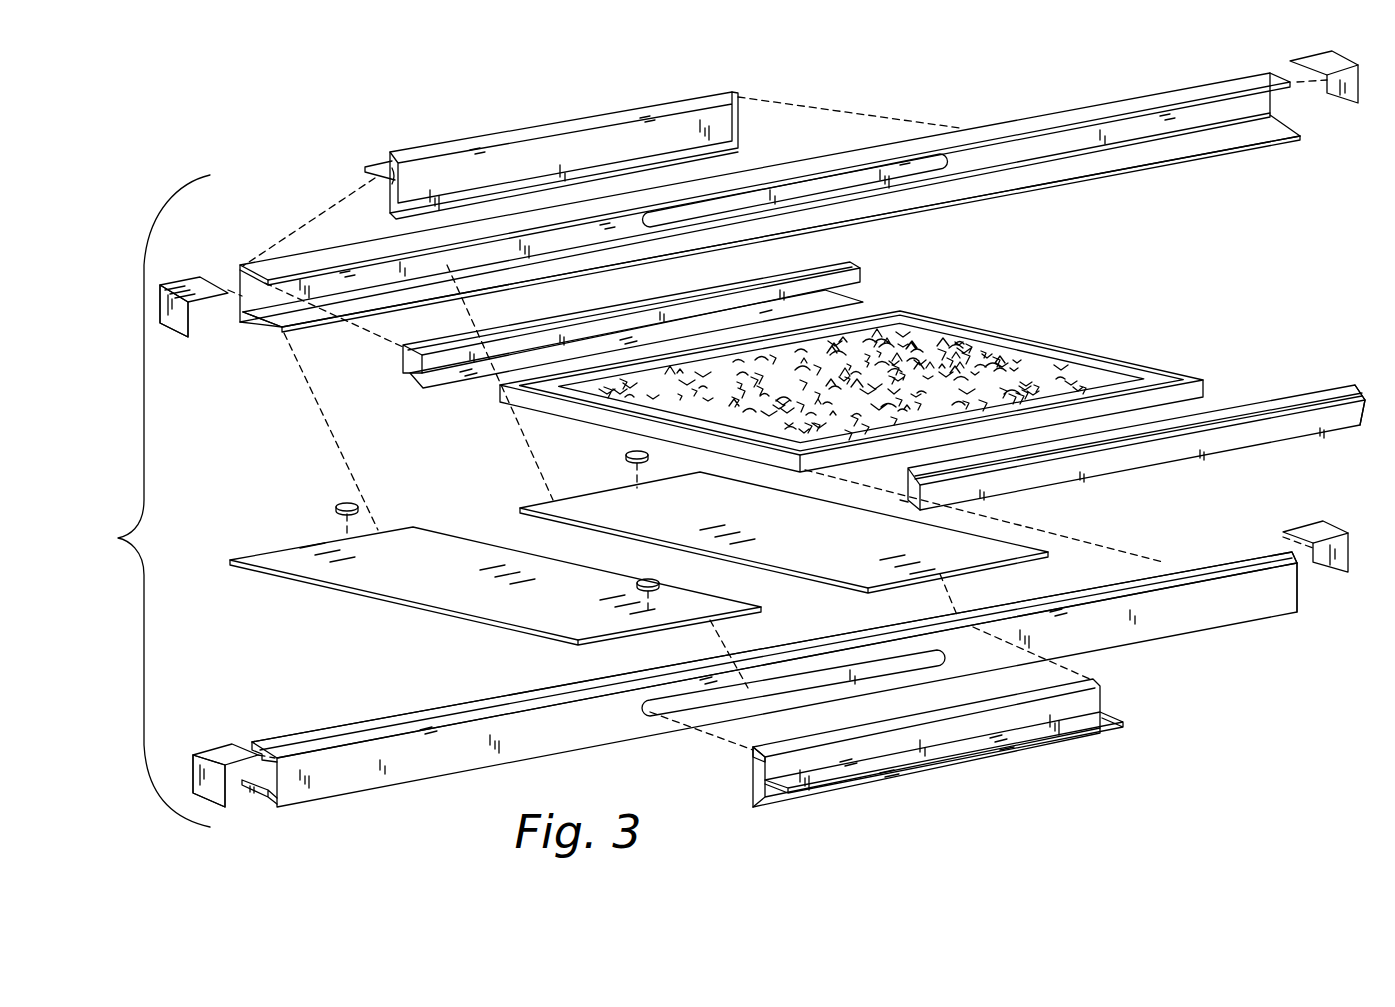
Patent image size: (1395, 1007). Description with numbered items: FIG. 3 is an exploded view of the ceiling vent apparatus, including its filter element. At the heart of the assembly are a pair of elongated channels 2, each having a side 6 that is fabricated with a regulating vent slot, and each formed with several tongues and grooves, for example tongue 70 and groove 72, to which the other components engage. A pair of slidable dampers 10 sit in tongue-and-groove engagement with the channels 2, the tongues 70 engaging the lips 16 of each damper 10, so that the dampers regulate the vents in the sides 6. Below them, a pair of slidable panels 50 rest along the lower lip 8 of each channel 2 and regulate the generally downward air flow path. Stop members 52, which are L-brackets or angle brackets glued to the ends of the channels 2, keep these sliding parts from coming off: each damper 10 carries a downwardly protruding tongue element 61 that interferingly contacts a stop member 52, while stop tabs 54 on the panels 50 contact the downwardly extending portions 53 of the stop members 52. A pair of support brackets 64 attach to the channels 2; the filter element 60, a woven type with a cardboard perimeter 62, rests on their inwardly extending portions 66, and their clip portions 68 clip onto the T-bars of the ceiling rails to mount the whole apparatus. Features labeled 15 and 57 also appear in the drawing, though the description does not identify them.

The elongated channel 2 is at (992, 130).
The side 6 is at (1150, 625).
The lower lip 8 is at (268, 322).
The slidable damper 10 is at (602, 103).
The flange 15 is at (378, 163).
The lip 16 is at (748, 765).
The slidable panel 50 is at (262, 555).
The stop member 52 is at (215, 815).
The downwardly extending portion 53 is at (185, 337).
The stop tab 54 is at (360, 508).
The corner bracket 57 is at (190, 275).
The filter element 60 is at (985, 338).
The tongue element 61 is at (392, 182).
The cardboard perimeter 62 is at (1050, 342).
The support bracket 64 is at (862, 280).
The inwardly extending portion 66 is at (872, 300).
The clip portion 68 is at (1358, 388).
The tongue 70 is at (275, 812).
The groove 72 is at (308, 742).